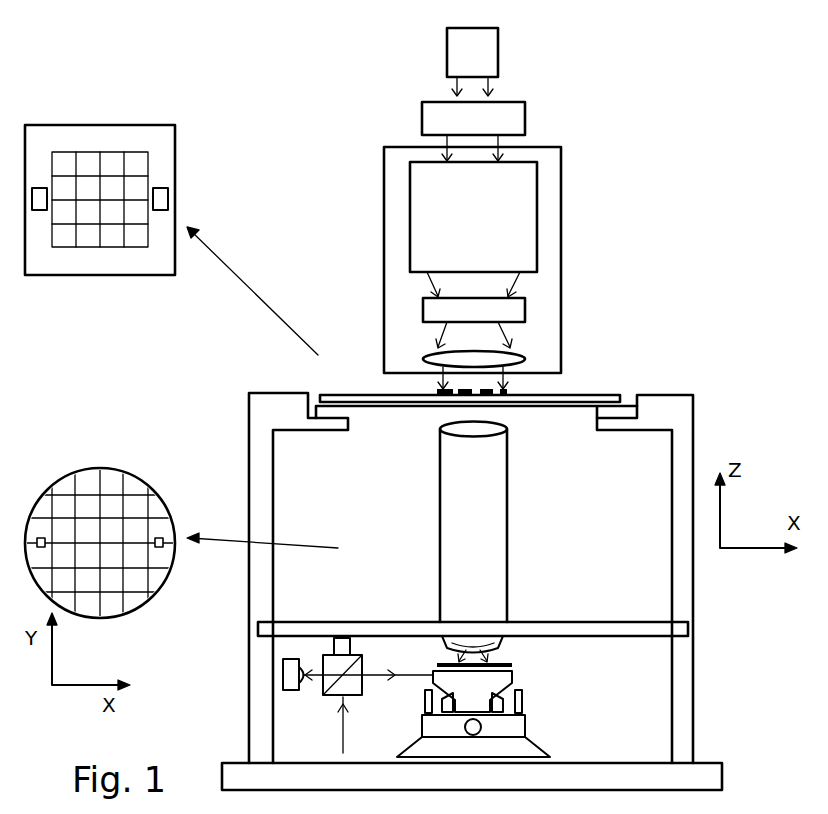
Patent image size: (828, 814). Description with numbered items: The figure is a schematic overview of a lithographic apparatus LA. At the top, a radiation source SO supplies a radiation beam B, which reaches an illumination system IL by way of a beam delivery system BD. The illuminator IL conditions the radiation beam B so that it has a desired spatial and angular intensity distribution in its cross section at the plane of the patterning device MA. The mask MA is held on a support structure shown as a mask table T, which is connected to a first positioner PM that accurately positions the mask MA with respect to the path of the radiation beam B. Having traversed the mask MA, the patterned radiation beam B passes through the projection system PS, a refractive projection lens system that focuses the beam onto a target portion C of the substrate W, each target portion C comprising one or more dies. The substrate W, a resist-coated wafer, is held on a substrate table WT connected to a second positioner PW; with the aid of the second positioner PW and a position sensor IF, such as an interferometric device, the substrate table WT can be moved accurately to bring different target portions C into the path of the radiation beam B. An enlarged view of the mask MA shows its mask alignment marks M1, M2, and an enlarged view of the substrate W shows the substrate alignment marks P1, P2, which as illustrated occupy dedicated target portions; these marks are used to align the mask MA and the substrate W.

The lithographic apparatus LA is at (712, 298).
The radiation source SO is at (498, 57).
The beam delivery system BD is at (525, 123).
The illumination system IL is at (561, 185).
The patterning device MA is at (437, 392).
The mask alignment mark M1 is at (163, 188).
The mask alignment mark M2 is at (40, 188).
The target portion C is at (90, 215).
The radiation beam B is at (475, 382).
The mask table (support structure) T is at (600, 395).
The first positioner PM is at (633, 418).
The projection system PS is at (507, 517).
The substrate W is at (437, 664).
The substrate alignment mark P1 is at (40, 537).
The substrate alignment mark P2 is at (158, 537).
The substrate table WT is at (512, 675).
The second positioner PW is at (525, 728).
The position sensor IF is at (316, 701).